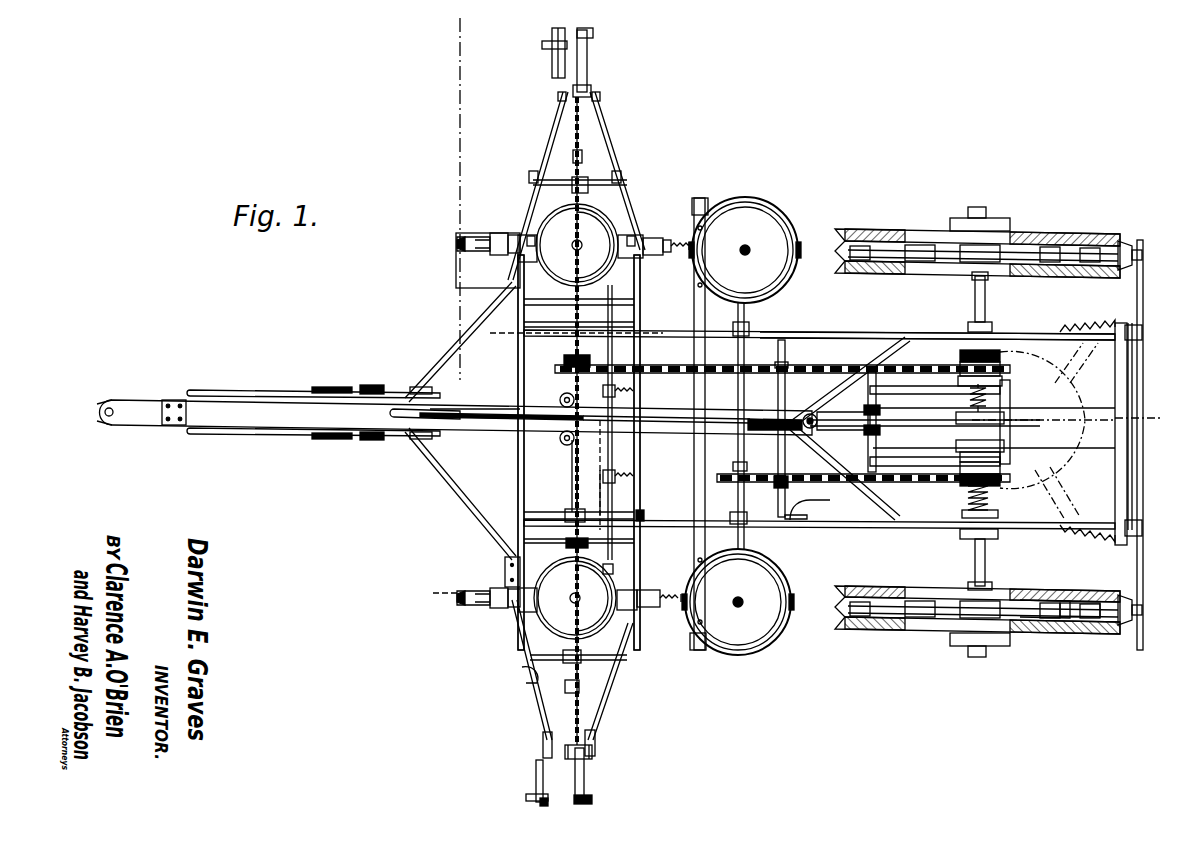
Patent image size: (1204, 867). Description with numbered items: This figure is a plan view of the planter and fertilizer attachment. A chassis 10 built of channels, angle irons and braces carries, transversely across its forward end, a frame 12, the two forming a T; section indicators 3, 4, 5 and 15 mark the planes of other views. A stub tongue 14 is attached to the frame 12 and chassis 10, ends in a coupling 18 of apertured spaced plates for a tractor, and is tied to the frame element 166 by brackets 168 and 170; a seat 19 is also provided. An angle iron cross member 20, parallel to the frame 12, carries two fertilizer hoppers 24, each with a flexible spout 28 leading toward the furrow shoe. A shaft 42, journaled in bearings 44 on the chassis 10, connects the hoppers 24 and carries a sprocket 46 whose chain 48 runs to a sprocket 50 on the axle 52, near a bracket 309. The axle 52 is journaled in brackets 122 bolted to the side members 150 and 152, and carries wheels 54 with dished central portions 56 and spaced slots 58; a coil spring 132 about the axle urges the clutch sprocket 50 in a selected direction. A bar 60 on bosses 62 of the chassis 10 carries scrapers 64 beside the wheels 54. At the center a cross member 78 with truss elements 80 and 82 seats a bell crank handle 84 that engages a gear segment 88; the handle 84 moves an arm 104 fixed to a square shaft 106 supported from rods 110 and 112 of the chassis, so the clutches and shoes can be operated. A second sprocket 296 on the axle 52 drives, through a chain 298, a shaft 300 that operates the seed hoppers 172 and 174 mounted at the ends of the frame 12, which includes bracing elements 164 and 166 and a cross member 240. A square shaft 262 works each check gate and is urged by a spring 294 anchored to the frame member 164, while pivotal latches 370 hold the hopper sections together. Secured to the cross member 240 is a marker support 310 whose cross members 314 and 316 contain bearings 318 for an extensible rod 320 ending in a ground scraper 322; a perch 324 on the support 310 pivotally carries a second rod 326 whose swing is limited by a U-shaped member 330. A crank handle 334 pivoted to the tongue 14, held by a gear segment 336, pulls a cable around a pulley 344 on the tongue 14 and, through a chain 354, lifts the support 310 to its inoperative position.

The chassis 10 is at (853, 322).
The frame 12 is at (508, 483).
The tongue 14 is at (488, 26).
The section line 15 is at (616, 460).
The coupling 18 is at (130, 391).
The seat 19 is at (972, 428).
The angle iron cross member 20 is at (706, 212).
The hoppers 24 is at (780, 228).
The flexible spout 28 is at (678, 243).
The section line 3 is at (496, 440).
The section line 4 is at (505, 333).
The section line 5 is at (447, 593).
The shaft 42 is at (745, 540).
The bearings 44 is at (752, 330).
The sprocket 46 is at (728, 523).
The chain 48 is at (802, 483).
The sprocket 50 is at (1000, 486).
The axle 52 is at (988, 555).
The wheels 54 is at (1040, 238).
The dished central portions 56 is at (1072, 598).
The spaced slots 58 is at (1036, 598).
The bar 60 is at (1144, 485).
The bosses 62 is at (1143, 334).
The scrapers 64 is at (1128, 244).
The cross member 78 is at (822, 515).
The truss element 80 is at (866, 520).
The truss element 82 is at (878, 352).
The handle 84 is at (462, 432).
The gear segment 88 is at (784, 432).
The arm 104 is at (636, 470).
The square shaft 106 is at (870, 416).
The rod 110 is at (1080, 398).
The rod 112 is at (1048, 452).
The bracket 122 is at (958, 536).
The coil spring 132 is at (990, 510).
The side member 150 is at (866, 330).
The side member 152 is at (638, 500).
The bracing element 164 is at (641, 287).
The bracing element 166 is at (515, 386).
The bracket 168 is at (452, 490).
The bracket 170 is at (435, 378).
The hopper 172 is at (628, 622).
The hopper 174 is at (548, 216).
The cross member 240 is at (632, 232).
The shaft 262 is at (600, 530).
The spring 294 is at (630, 394).
The sprocket 296 is at (1000, 372).
The chain 298 is at (566, 386).
The shaft 300 is at (572, 490).
The bracket 309 is at (784, 366).
The support 310 is at (612, 142).
The cross member 314 is at (545, 680).
The cross member 316 is at (588, 752).
The bearings 318 is at (598, 740).
The rod 320 is at (592, 62).
The scraper 322 is at (595, 800).
The perch 324 is at (545, 752).
The arm or rod 326 is at (535, 772).
The U-shaped member 330 is at (526, 795).
The crank-type handle 334 is at (280, 432).
The gear segment 336 is at (342, 436).
The pulley 344 is at (564, 444).
The chain 354 is at (565, 605).
The pivotal latches 370 is at (612, 571).